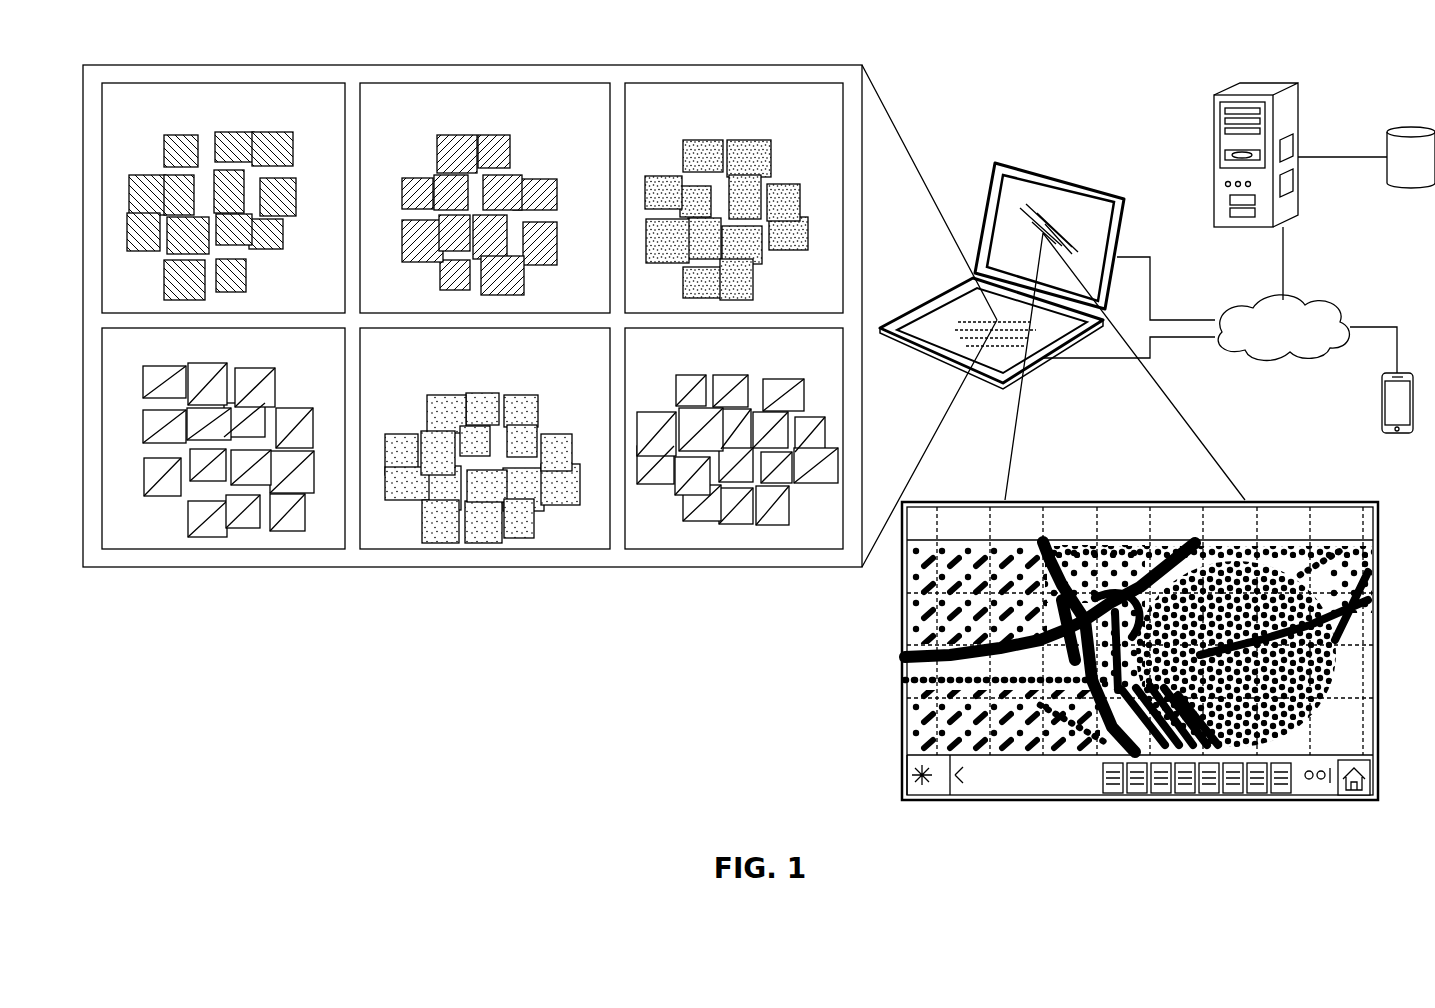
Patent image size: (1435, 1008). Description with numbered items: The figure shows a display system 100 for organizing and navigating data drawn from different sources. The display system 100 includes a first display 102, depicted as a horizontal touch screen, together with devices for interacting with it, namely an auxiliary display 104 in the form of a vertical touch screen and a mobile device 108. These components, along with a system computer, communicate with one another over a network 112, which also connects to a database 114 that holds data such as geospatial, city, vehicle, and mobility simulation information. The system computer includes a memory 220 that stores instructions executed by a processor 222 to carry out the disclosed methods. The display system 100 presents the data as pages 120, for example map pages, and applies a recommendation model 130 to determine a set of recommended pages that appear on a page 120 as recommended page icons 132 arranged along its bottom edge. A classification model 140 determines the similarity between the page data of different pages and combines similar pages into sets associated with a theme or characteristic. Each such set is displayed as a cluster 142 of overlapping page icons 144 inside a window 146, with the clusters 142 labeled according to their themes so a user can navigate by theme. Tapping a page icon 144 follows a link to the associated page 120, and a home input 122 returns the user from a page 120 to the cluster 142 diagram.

The display system 100 is at (1135, 114).
The first display 102 is at (948, 288).
The auxiliary display 104 is at (1033, 173).
The mobile device 108 is at (1382, 403).
The network 112 is at (1317, 303).
The database 114 is at (1420, 123).
The page 120 is at (1140, 632).
The home input 122 is at (1342, 790).
The recommendation model 130 is at (1297, 148).
The recommended page icon 132 is at (1170, 790).
The classification model 140 is at (1297, 177).
The cluster 142 is at (832, 168).
The page icon 144 is at (150, 390).
The window 146 is at (863, 112).
The memory 220 is at (1228, 202).
The processor 222 is at (1242, 218).